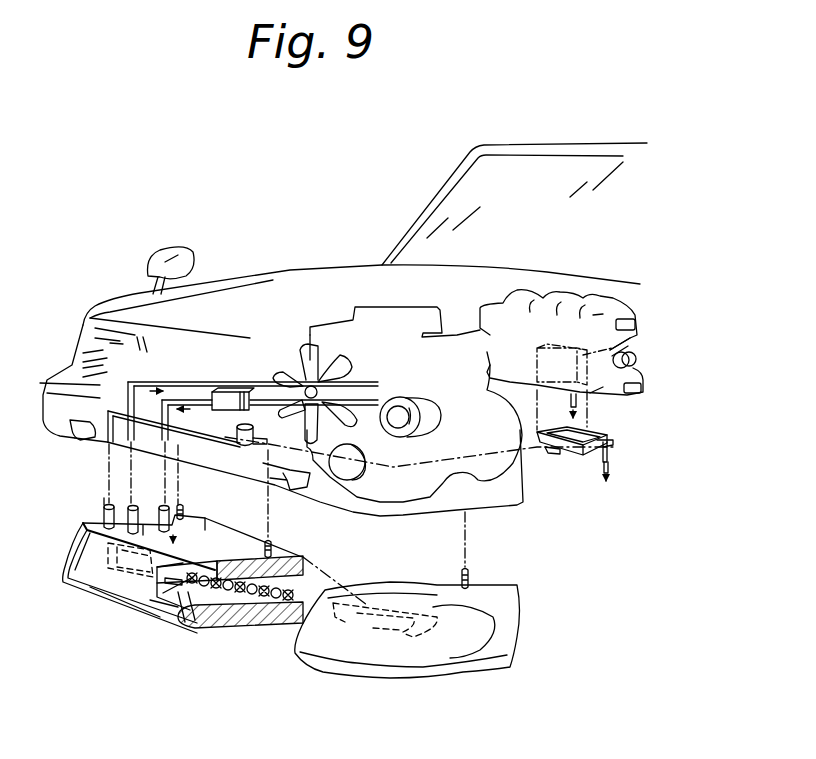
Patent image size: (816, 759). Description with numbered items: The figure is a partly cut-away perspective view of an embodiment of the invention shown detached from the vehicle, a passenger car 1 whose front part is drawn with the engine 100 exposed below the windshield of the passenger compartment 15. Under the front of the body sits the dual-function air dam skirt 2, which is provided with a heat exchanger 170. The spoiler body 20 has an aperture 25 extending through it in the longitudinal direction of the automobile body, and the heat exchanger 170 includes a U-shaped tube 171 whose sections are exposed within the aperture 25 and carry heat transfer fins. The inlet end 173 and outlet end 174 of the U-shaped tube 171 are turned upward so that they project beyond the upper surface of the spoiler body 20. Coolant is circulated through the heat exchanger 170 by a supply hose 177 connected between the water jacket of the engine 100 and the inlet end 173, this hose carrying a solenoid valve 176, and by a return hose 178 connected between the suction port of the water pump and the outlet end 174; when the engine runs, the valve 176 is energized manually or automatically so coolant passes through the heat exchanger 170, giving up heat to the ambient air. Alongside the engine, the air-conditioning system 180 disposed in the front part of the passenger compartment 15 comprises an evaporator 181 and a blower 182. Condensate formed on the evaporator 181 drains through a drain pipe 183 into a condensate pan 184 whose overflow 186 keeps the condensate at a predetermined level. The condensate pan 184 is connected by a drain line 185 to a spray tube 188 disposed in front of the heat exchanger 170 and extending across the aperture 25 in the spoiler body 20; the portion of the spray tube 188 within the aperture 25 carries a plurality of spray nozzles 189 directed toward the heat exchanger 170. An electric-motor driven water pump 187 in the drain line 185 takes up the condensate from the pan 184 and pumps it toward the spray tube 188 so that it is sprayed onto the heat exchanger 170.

The passenger car 1 is at (335, 233).
The air dam skirt 2 is at (70, 603).
The passenger compartment 15 is at (556, 232).
The spoiler body 20 is at (98, 608).
The aperture 25 is at (165, 588).
The engine 100 is at (400, 293).
The heat exchanger 170 is at (240, 620).
The U-shaped tube 171 is at (390, 608).
The inlet end 173 is at (180, 505).
The outlet end 174 is at (112, 498).
The solenoid valve 176 is at (250, 388).
The supply hose 177 is at (174, 401).
The return hose 178 is at (200, 381).
The air-conditioning system 180 is at (645, 358).
The evaporator 181 is at (640, 343).
The blower 182 is at (615, 302).
The drain pipe 183 is at (585, 393).
The condensate pan 184 is at (613, 441).
The drain line 185 is at (200, 432).
The overflow 186 is at (600, 470).
The water pump 187 is at (243, 446).
The spray tube 188 is at (185, 592).
The spray nozzles 189 is at (220, 612).